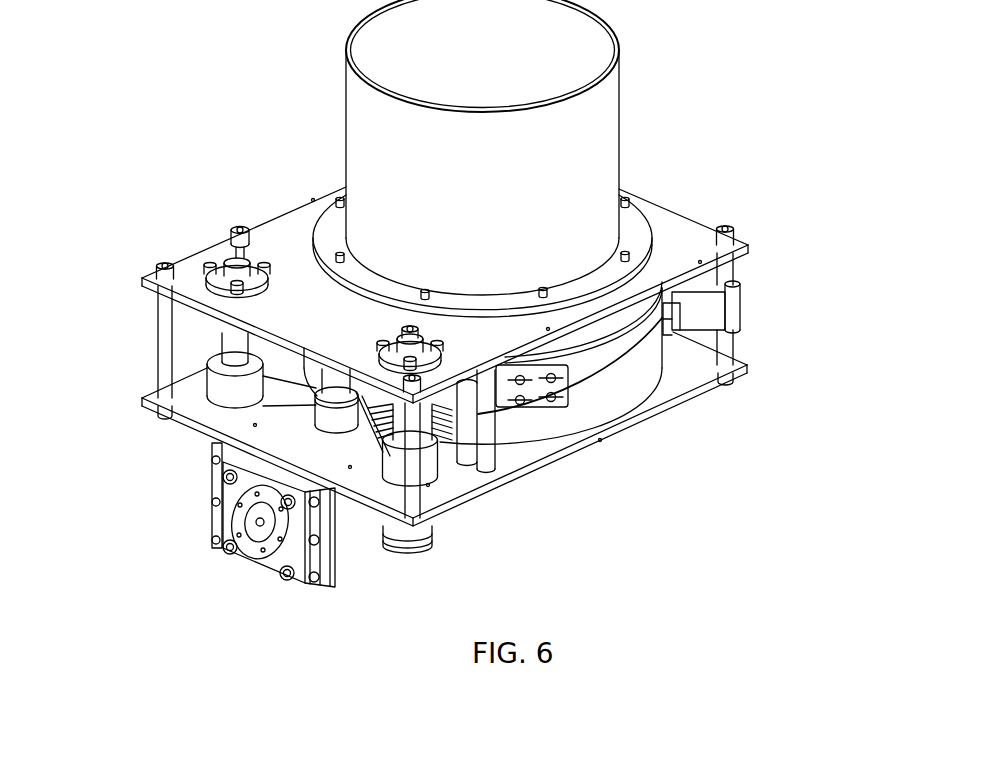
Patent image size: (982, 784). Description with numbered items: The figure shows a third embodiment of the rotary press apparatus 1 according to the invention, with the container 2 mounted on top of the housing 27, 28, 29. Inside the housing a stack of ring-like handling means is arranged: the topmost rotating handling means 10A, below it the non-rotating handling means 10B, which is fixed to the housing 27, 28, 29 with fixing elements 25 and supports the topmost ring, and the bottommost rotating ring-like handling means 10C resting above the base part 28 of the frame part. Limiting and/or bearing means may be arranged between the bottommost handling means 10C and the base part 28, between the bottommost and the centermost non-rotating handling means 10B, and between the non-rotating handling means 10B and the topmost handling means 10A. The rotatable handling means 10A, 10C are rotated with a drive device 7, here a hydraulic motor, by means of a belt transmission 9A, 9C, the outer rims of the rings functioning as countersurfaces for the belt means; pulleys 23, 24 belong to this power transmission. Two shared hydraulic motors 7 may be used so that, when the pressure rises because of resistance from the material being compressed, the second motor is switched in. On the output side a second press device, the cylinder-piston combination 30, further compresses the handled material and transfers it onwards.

The dispensing apparatus 1 is at (139, 233).
The hopper container 2 is at (588, 122).
The drive device 7 is at (208, 443).
The belt transmission 9A is at (560, 342).
The belt transmission 9C is at (445, 455).
The topmost rotating handling means 10A is at (593, 333).
The non-rotating handling means 10B is at (622, 353).
The bottommost ring-like handling means 10C is at (630, 387).
The drive pulley 23 is at (227, 343).
The driven pulley 24 is at (383, 430).
The fixing elements 25 is at (730, 317).
The housing 27 is at (693, 228).
The base part 28 is at (180, 402).
The housing 29 is at (728, 273).
The cylinder-piston combination 30 is at (267, 588).